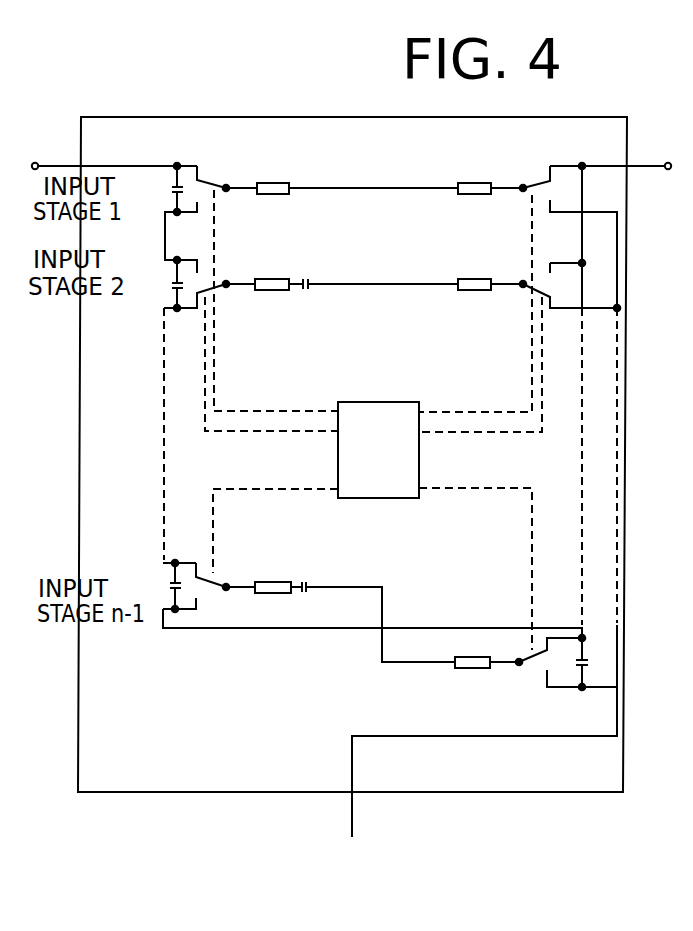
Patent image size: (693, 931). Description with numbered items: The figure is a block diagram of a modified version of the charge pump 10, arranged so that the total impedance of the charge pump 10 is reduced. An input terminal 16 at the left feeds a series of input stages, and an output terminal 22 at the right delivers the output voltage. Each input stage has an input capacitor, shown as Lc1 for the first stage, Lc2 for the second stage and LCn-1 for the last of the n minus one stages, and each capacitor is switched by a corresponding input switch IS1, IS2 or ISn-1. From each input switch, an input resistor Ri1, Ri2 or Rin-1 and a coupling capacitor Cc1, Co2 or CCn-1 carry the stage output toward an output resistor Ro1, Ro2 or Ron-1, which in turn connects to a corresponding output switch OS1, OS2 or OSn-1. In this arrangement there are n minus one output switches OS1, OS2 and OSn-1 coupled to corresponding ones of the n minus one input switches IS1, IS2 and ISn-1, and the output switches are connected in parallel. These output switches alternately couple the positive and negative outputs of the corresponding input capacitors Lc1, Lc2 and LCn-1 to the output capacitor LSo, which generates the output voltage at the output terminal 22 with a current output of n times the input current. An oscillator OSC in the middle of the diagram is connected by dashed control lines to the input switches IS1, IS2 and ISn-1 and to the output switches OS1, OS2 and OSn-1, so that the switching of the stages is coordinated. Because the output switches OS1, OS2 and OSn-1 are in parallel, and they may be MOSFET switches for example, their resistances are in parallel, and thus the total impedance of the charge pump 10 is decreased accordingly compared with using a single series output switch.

The charge pump 10 is at (288, 117).
The input terminal 16 is at (36, 163).
The output terminal 22 is at (668, 163).
The input stage 1 capacitor Lc1 is at (156, 189).
The input stage 2 capacitor Lc2 is at (150, 261).
The input stage n-1 capacitor LCn-1 is at (160, 586).
The input switch 1 IS1 is at (214, 199).
The input switch 2 IS2 is at (211, 291).
The input switch n-1 ISn-1 is at (226, 592).
The input resistor 1 Ri1 is at (342, 176).
The input resistor 2 Ri2 is at (264, 269).
The input resistor n-1 Rin-1 is at (263, 574).
The coupling capacitor 1 Cc1 is at (320, 173).
The coupling capacitor 2 Co2 is at (380, 269).
The coupling capacitor n-1 CCn-1 is at (378, 609).
The output resistor 1 Ro1 is at (490, 176).
The output resistor 2 Ro2 is at (490, 269).
The output resistor n-1 Ron-1 is at (487, 649).
The output switch 1 OS1 is at (562, 234).
The output switch 2 OS2 is at (552, 290).
The output switch n-1 OSn-1 is at (545, 668).
The output capacitor LSo is at (593, 663).
The oscillator OSC is at (378, 450).